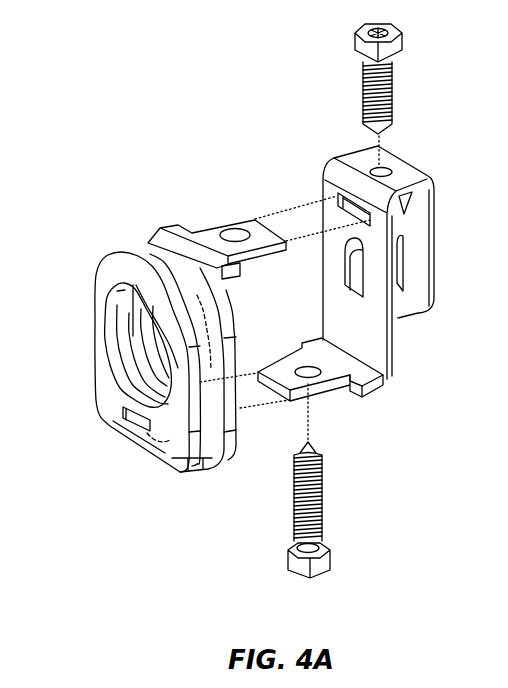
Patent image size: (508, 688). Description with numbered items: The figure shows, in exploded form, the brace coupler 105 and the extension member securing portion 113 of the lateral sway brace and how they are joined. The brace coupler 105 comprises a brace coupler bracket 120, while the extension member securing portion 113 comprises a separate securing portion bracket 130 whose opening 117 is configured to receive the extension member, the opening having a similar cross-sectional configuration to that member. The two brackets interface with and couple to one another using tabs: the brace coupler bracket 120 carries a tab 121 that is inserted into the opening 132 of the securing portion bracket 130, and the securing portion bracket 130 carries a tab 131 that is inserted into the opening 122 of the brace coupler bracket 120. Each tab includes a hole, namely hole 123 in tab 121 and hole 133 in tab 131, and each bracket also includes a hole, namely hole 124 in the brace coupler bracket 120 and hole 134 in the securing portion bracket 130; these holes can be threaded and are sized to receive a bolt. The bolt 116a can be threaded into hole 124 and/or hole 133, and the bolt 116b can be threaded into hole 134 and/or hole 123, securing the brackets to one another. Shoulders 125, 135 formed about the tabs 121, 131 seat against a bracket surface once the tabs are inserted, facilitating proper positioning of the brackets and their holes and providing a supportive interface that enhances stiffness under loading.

The brace coupler 105 is at (102, 187).
The extension member securing portion 113 is at (299, 149).
The bolt 116a is at (330, 568).
The bolt 116b is at (402, 43).
The opening 117 is at (347, 268).
The brace coupler bracket 120 is at (94, 343).
The tab 121 is at (249, 218).
The opening 122 is at (132, 430).
The hole 123 is at (228, 233).
The hole 124 is at (157, 438).
The shoulder 125 is at (238, 268).
The securing portion bracket 130 is at (434, 250).
The tab 131 is at (320, 390).
The opening 132 is at (350, 209).
The hole 133 is at (305, 368).
The hole 134 is at (393, 166).
The shoulder 135 is at (355, 386).